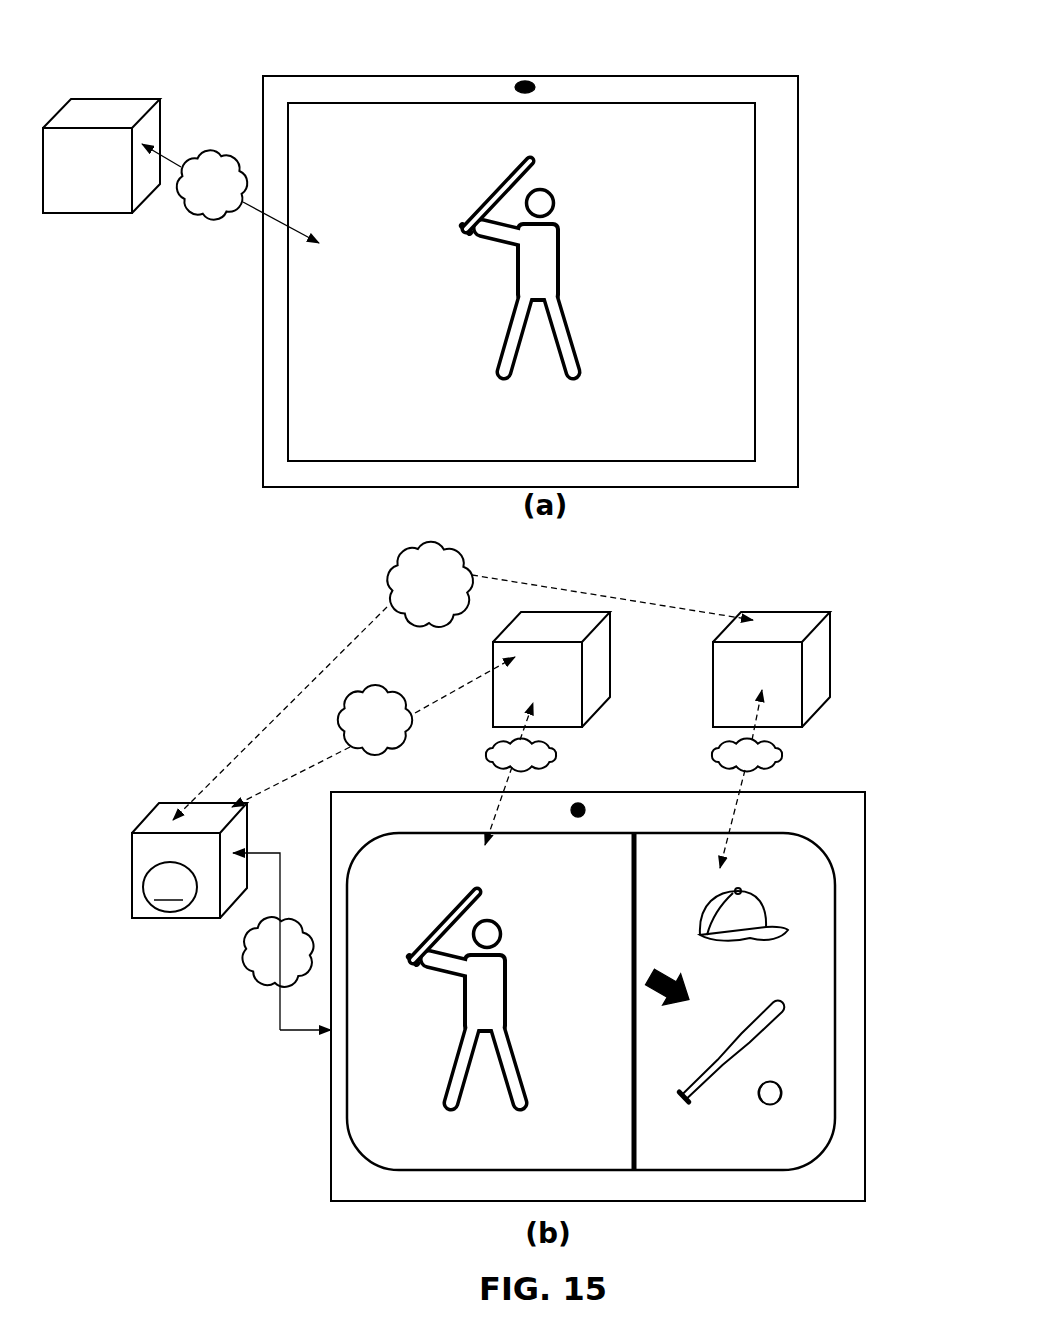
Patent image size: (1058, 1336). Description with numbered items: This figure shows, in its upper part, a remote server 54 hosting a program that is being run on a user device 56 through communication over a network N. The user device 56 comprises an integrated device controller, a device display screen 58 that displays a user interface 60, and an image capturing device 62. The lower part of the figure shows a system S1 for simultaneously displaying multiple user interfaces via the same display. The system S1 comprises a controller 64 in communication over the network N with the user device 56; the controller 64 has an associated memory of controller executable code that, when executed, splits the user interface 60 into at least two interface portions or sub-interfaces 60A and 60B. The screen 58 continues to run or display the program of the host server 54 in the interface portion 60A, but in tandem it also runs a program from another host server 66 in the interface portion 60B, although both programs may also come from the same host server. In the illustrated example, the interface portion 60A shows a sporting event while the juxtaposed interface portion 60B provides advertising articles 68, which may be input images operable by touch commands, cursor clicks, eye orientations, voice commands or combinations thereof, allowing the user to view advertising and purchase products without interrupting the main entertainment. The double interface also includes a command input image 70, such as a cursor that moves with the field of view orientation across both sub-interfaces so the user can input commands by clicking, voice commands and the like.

The remote server 54 is at (84, 179).
The user device 56 is at (798, 213).
The device display screen 58 is at (354, 105).
The user interface 60 is at (675, 142).
The interface portion 60A is at (381, 1074).
The interface portion 60B is at (798, 990).
The image capturing device 62 is at (517, 82).
The controller 64 is at (187, 865).
The host server 66 is at (747, 682).
The articles 68 is at (743, 903).
The command input image 70 is at (650, 990).
The system S1 is at (197, 643).
The network N is at (713, 748).